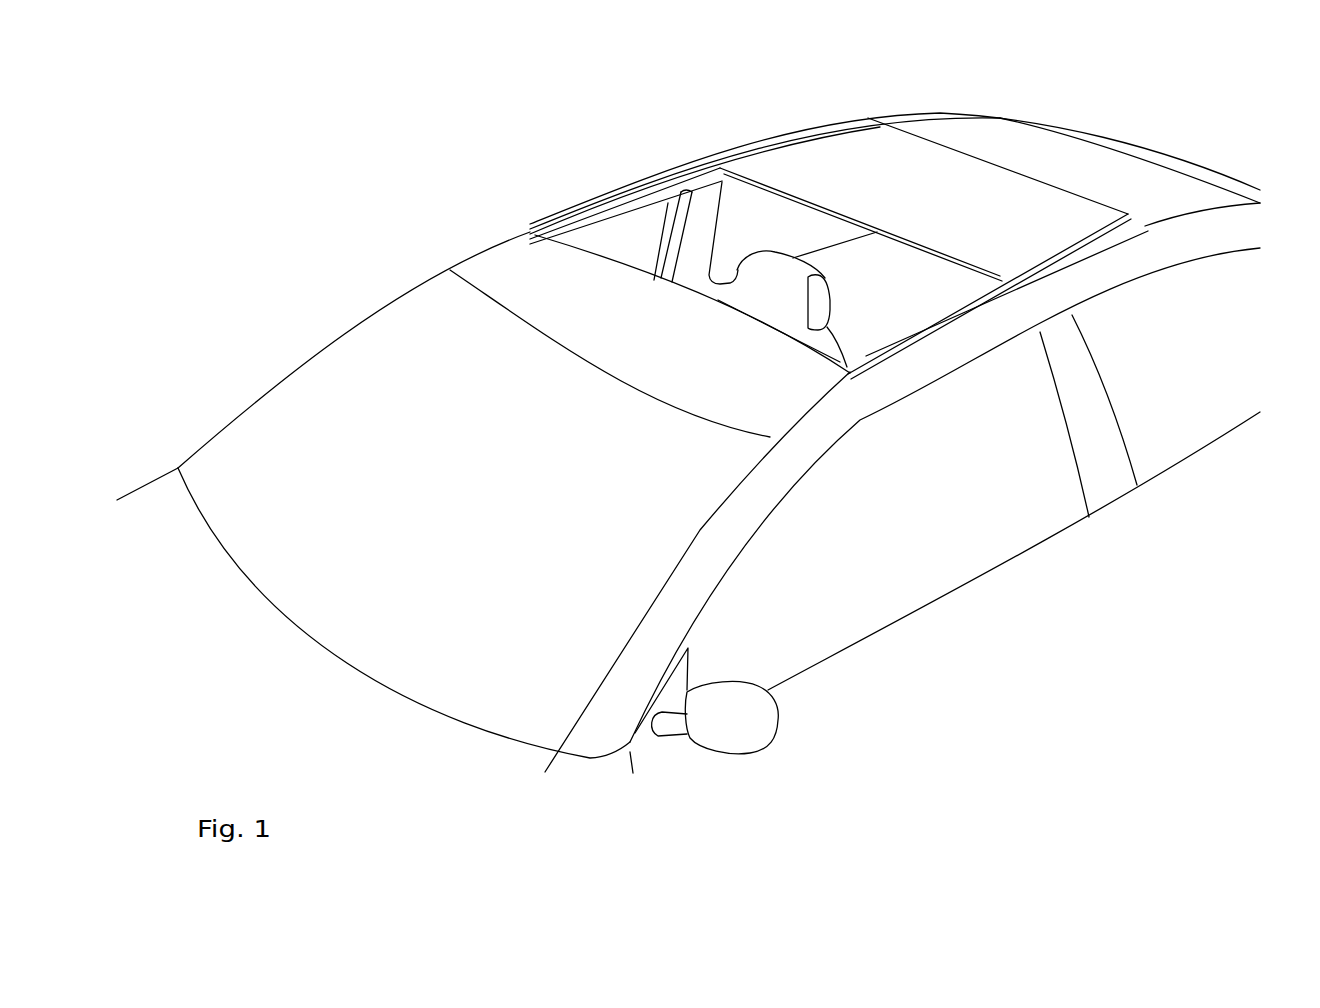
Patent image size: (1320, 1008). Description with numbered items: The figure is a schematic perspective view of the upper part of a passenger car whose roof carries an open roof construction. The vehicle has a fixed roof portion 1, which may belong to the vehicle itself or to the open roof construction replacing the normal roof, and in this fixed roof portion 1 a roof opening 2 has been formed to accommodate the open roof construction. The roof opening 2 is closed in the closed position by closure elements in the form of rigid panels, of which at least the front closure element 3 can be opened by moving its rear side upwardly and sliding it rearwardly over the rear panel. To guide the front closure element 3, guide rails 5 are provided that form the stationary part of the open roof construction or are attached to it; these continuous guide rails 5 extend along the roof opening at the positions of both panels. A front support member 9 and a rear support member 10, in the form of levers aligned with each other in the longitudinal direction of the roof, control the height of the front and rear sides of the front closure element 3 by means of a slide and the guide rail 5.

The fixed roof portion 1 is at (528, 283).
The roof opening 2 is at (642, 223).
The front closure element 3 is at (927, 179).
The guide rails 5 is at (593, 207).
The front support member 9 is at (1005, 285).
The rear support member 10 is at (1130, 236).